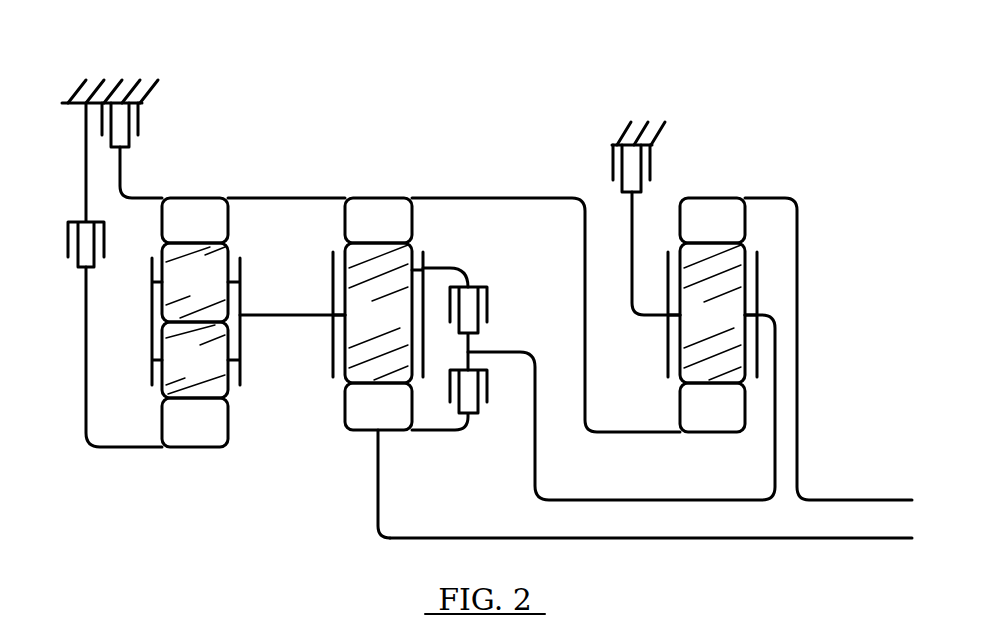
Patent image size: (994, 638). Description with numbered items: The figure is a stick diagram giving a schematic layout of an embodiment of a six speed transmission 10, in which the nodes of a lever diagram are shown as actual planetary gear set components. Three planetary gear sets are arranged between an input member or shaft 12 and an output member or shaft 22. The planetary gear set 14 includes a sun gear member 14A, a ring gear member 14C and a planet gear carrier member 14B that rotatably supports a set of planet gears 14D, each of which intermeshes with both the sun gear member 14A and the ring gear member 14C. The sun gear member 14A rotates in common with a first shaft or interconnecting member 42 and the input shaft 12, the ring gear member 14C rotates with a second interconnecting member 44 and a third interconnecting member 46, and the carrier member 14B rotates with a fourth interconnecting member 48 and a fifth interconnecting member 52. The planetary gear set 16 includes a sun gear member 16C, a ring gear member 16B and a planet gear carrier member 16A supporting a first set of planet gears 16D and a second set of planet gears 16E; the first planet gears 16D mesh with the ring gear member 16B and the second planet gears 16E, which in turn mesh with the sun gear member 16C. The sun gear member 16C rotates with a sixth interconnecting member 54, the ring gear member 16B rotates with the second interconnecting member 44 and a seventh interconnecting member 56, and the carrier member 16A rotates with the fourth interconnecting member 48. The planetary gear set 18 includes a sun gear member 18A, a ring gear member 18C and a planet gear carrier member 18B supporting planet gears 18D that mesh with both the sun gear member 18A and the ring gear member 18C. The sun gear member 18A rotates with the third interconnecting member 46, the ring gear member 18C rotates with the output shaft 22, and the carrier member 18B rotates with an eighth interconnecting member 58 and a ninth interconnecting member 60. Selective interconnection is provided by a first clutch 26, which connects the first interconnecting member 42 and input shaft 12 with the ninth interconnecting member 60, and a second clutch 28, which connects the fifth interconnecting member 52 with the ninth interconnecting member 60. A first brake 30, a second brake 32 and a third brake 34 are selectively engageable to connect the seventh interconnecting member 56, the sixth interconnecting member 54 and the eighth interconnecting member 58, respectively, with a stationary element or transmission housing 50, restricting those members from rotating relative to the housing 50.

The six speed transmission 10 is at (730, 62).
The input member or shaft 12 is at (852, 538).
The planetary gear set 14 is at (375, 370).
The sun gear member 14A is at (360, 420).
The planet gear carrier member 14B is at (425, 262).
The ring gear member 14C is at (360, 234).
The planet gears 14D is at (360, 328).
The planetary gear set 16 is at (219, 374).
The planet gear carrier member 16A is at (242, 353).
The ring gear member 16B is at (177, 234).
The sun gear member 16C is at (177, 435).
The first set of planet gears 16D is at (177, 295).
The second set of planet gears 16E is at (177, 373).
The planetary gear set 18 is at (703, 266).
The sun gear member 18A is at (694, 420).
The planet gear carrier member 18B is at (758, 270).
The ring gear member 18C is at (694, 234).
The planet gears 18D is at (694, 328).
The output member or shaft 22 is at (798, 352).
The first clutch 26 is at (487, 392).
The second clutch 28 is at (487, 300).
The first brake 30 is at (130, 142).
The second brake 32 is at (72, 222).
The third brake 34 is at (612, 170).
The first shaft or interconnecting member 42 is at (427, 433).
The second shaft or interconnecting member 44 is at (302, 197).
The third shaft or interconnecting member 46 is at (463, 197).
The fourth shaft or interconnecting member 48 is at (275, 315).
The stationary element or transmission housing 50 is at (153, 88).
The fifth shaft or interconnecting member 52 is at (448, 265).
The sixth shaft or interconnecting member 54 is at (85, 360).
The seventh shaft or interconnecting member 56 is at (150, 201).
The eighth shaft or interconnecting member 58 is at (631, 270).
The ninth shaft or interconnecting member 60 is at (536, 450).